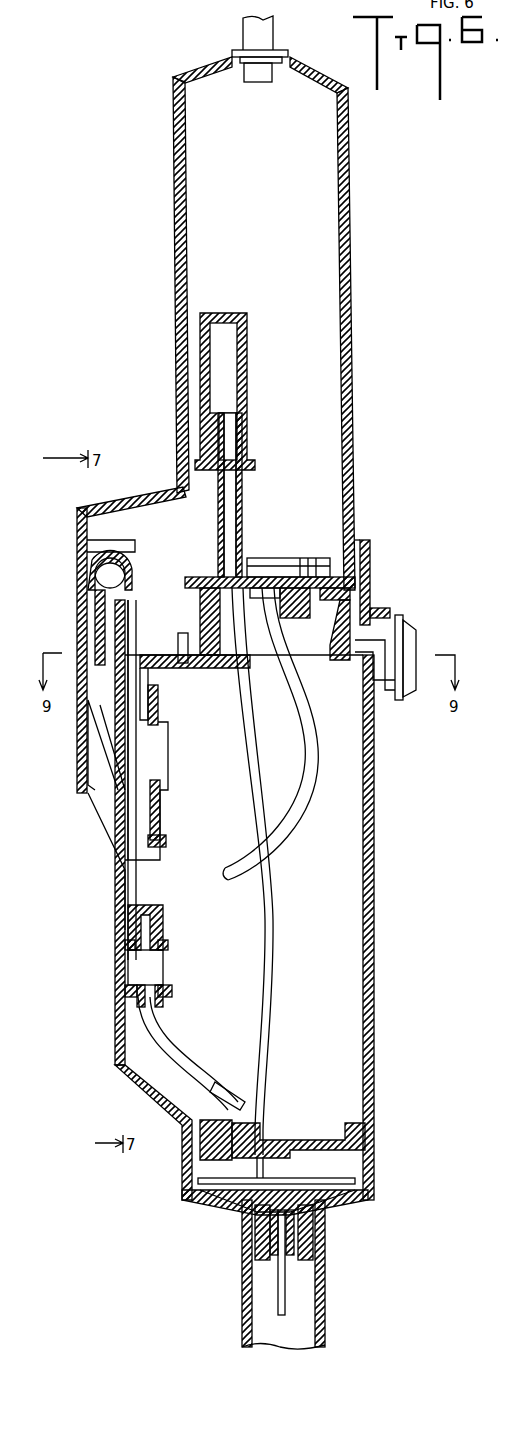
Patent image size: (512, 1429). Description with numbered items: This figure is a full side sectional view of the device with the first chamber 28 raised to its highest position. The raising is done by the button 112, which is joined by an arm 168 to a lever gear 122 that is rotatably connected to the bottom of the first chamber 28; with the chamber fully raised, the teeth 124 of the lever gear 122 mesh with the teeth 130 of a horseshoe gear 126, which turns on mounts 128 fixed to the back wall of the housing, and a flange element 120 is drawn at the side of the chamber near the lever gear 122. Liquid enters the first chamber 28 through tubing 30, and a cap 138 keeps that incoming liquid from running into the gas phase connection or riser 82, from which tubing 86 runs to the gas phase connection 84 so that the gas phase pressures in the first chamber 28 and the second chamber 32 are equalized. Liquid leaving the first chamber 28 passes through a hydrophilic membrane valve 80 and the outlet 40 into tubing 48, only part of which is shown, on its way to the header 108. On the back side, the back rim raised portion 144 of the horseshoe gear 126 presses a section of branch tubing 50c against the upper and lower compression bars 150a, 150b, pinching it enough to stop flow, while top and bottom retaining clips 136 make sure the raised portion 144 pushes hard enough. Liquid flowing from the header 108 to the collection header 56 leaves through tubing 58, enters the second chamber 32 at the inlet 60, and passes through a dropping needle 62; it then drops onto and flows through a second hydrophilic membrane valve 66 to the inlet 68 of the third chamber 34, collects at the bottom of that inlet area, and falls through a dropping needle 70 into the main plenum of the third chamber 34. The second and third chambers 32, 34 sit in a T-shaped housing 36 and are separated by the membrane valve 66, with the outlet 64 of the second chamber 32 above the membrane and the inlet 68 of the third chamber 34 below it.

The first chamber 28 is at (355, 240).
The tubing 30 is at (245, 32).
The second chamber 32 is at (300, 1132).
The third chamber 34 is at (326, 1306).
The T-shaped housing 36 is at (344, 1218).
The outlet 40 is at (282, 600).
The tubing 48 is at (298, 830).
The branch tubing 50c is at (162, 808).
The collection header 56 is at (166, 964).
The tubing 58 is at (168, 1048).
The inlet 60 is at (228, 1090).
The dropping needle 62 is at (257, 1160).
The outlet 64 is at (270, 1180).
The hydrophilic membrane valve 66 is at (300, 1192).
The inlet 68 is at (240, 1212).
The dropping needle 70 is at (278, 1290).
The hydrophilic membrane valve 80 is at (306, 572).
The gas phase connection (riser) 82 is at (243, 505).
The gas phase connection 84 is at (264, 1108).
The tubing 86 is at (274, 922).
The header 108 is at (95, 568).
The button 112 is at (408, 642).
The flange 120 is at (370, 608).
The lever gear 122 is at (210, 658).
The teeth 124 is at (178, 633).
The horseshoe gear 126 is at (160, 712).
The mounts 128 is at (165, 752).
The teeth 130 is at (160, 680).
The retaining clips 136 is at (160, 655).
The cap 138 is at (249, 372).
The back rim raised portion 144 is at (128, 846).
The upper compression bar 150a is at (122, 812).
The lower compression bar 150b is at (120, 874).
The arm 168 is at (386, 690).